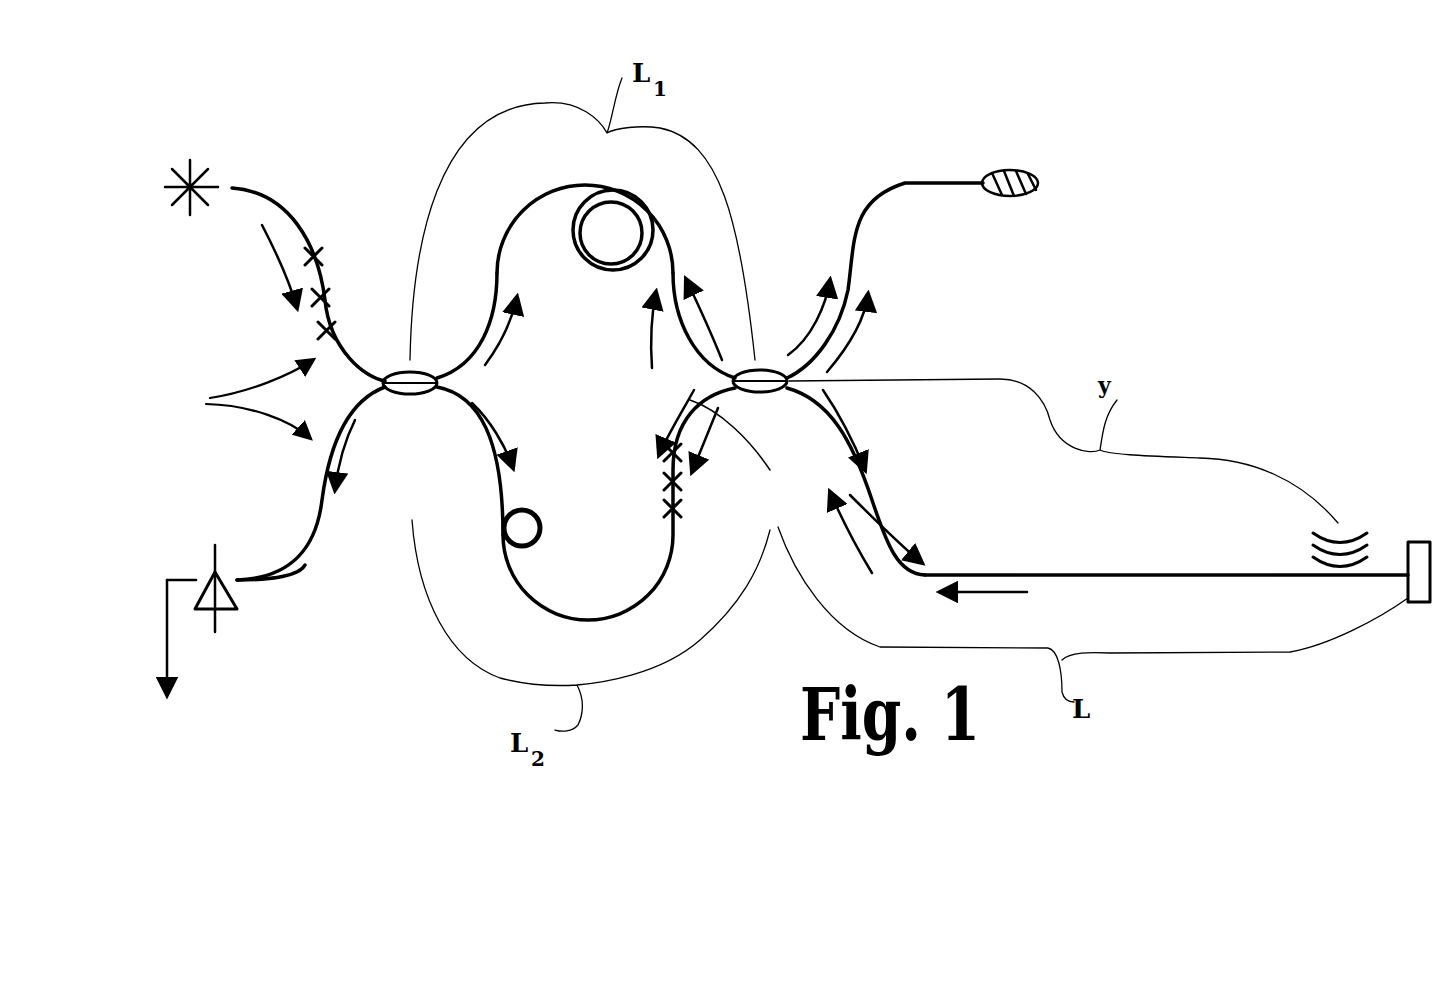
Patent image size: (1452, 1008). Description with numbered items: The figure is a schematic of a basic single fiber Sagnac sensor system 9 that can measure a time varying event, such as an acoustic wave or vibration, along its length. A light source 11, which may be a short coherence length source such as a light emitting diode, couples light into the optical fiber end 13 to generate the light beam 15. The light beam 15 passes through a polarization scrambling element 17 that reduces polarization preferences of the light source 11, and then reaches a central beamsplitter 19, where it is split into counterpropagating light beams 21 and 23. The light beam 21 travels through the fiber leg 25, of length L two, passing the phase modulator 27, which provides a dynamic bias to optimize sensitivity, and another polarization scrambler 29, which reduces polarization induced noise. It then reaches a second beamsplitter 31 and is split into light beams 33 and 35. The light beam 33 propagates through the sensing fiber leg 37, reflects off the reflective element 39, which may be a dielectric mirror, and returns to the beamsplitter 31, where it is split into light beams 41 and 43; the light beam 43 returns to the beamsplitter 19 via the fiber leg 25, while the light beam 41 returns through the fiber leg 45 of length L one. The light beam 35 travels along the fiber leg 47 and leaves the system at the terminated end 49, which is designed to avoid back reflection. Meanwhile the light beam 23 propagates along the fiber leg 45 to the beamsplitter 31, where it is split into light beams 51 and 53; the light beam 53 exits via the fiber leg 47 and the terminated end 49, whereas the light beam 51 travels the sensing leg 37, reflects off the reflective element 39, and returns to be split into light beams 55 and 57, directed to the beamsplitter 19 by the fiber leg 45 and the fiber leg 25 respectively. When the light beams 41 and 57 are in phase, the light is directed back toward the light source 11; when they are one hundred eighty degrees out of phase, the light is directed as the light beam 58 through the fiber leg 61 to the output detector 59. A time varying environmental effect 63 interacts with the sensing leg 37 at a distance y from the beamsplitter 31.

The single fiber Sagnac sensor system 9 is at (242, 399).
The light source 11 is at (183, 210).
The optical fiber end 13 is at (232, 186).
The light beam 15 is at (280, 248).
The polarization scrambling element 17 is at (340, 296).
The central beamsplitter 19 is at (408, 395).
The light beam 21 is at (500, 410).
The light beam 23 is at (505, 350).
The fiber leg 25 is at (548, 618).
The phase modulator 27 is at (502, 528).
The polarization scrambler 29 is at (682, 485).
The second beamsplitter 31 is at (768, 395).
The light beam 33 is at (845, 412).
The light beam 35 is at (855, 345).
The fiber leg 37 is at (1077, 578).
The reflective element 39 is at (1405, 594).
The light beam 41 is at (672, 335).
The light beam 43 is at (660, 405).
The fiber leg 45 is at (528, 200).
The fiber leg 47 is at (915, 182).
The terminated end 49 is at (1010, 170).
The light beam 51 is at (878, 522).
The light beam 53 is at (818, 325).
The light beam 55 is at (708, 340).
The light beam 57 is at (742, 458).
The light beam 58 is at (350, 435).
The output detector 59 is at (212, 578).
The fiber leg 61 is at (303, 560).
The time varying environmental effect 63 is at (1345, 545).